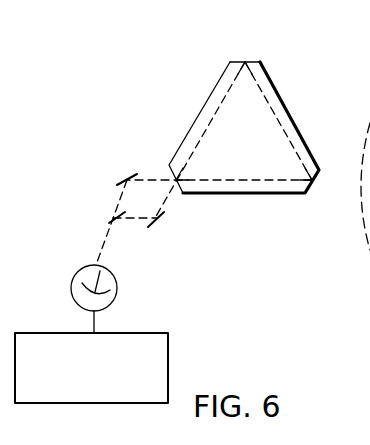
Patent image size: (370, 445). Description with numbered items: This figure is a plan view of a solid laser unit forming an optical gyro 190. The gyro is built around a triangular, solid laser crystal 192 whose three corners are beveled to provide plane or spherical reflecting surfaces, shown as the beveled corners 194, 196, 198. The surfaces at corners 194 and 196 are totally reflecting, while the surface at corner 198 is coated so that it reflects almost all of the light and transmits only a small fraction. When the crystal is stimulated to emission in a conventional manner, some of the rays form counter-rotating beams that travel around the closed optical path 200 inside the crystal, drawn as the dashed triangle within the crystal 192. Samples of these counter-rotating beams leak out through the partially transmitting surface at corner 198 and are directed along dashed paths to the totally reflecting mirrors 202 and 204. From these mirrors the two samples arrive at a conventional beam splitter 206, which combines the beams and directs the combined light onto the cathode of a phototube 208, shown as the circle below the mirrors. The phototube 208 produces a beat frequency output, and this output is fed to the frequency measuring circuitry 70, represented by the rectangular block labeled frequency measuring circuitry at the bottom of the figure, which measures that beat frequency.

The frequency measuring circuitry 70 is at (168, 368).
The optical gyro 190 is at (307, 112).
The solid laser crystal 192 is at (275, 76).
The beveled corner 194 is at (245, 62).
The beveled corner 196 is at (304, 193).
The beveled corner 198 is at (177, 181).
The optical path 200 is at (218, 107).
The totally reflecting mirror 202 is at (126, 180).
The totally reflecting mirror 204 is at (155, 224).
The beam splitter 206 is at (112, 218).
The phototube 208 is at (118, 288).